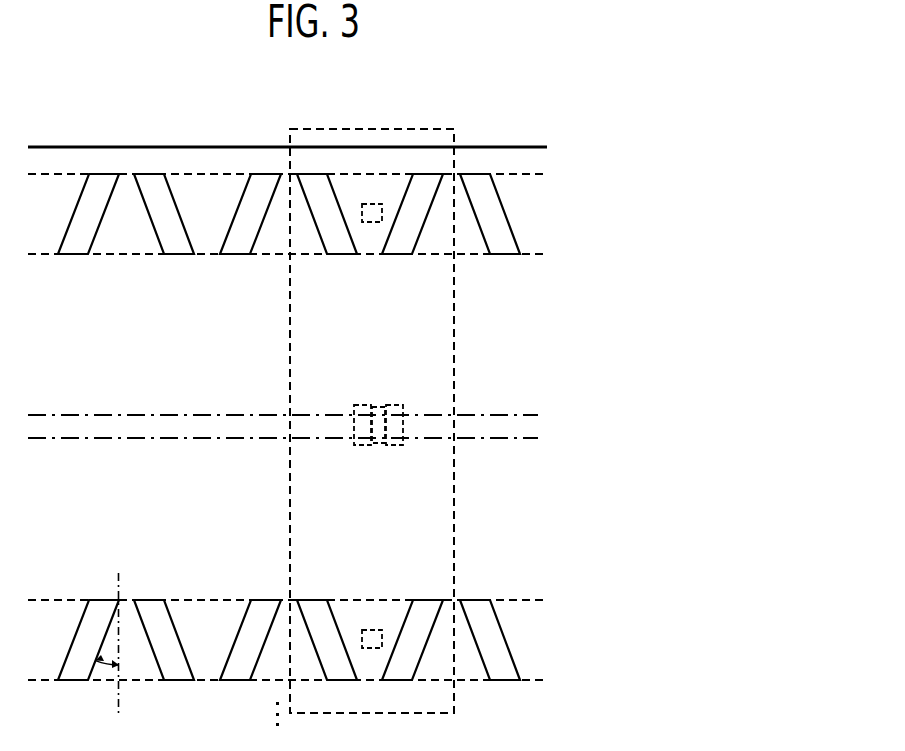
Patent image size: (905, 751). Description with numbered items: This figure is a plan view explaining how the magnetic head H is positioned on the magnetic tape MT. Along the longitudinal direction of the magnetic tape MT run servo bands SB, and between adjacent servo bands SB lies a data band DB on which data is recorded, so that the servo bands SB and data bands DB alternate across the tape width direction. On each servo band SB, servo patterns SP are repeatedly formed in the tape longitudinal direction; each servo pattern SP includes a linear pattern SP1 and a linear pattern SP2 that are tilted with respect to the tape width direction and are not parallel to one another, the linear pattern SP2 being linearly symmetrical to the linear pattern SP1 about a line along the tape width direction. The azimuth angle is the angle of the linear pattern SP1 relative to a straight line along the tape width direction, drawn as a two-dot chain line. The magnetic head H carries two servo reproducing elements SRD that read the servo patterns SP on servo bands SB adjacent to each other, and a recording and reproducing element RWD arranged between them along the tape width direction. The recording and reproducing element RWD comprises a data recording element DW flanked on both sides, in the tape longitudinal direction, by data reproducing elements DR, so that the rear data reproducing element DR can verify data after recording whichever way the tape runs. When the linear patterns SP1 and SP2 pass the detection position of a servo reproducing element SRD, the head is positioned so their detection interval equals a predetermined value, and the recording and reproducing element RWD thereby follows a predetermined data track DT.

The magnetic head H is at (380, 129).
The magnetic tape MT is at (502, 146).
The servo band SB is at (535, 221).
The servo pattern SP is at (289, 427).
The linear pattern SP1 is at (93, 238).
The linear pattern SP2 is at (159, 238).
The servo reproducing element SRD is at (372, 223).
The data band DB is at (533, 345).
The data track DT is at (533, 427).
The recording and reproducing element RWD is at (367, 442).
The data reproducing element DR is at (358, 446).
The data recording element DW is at (378, 446).